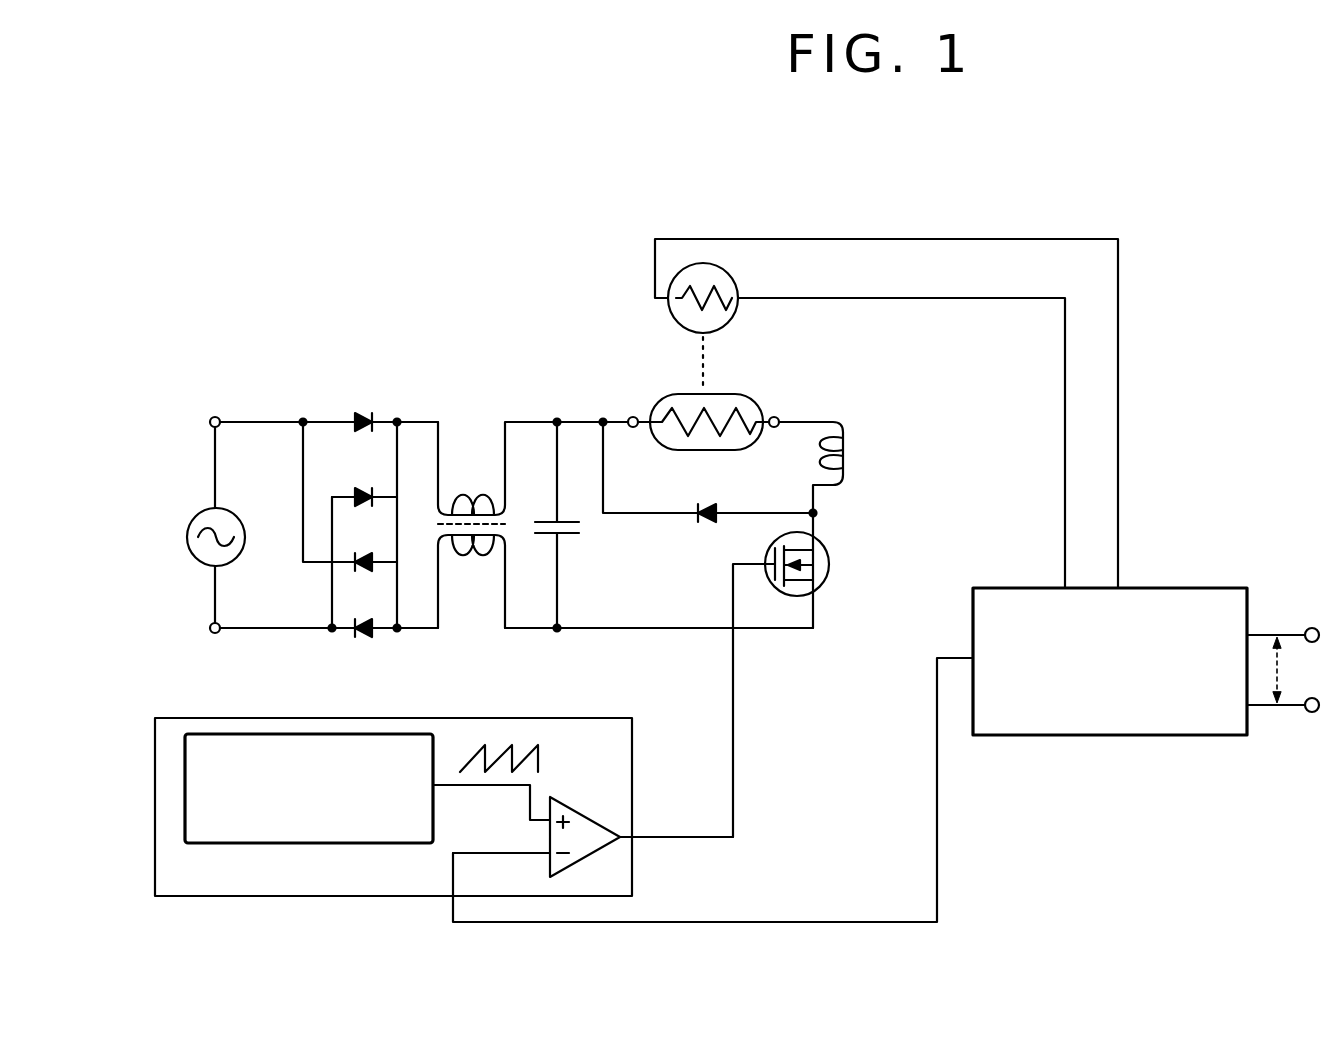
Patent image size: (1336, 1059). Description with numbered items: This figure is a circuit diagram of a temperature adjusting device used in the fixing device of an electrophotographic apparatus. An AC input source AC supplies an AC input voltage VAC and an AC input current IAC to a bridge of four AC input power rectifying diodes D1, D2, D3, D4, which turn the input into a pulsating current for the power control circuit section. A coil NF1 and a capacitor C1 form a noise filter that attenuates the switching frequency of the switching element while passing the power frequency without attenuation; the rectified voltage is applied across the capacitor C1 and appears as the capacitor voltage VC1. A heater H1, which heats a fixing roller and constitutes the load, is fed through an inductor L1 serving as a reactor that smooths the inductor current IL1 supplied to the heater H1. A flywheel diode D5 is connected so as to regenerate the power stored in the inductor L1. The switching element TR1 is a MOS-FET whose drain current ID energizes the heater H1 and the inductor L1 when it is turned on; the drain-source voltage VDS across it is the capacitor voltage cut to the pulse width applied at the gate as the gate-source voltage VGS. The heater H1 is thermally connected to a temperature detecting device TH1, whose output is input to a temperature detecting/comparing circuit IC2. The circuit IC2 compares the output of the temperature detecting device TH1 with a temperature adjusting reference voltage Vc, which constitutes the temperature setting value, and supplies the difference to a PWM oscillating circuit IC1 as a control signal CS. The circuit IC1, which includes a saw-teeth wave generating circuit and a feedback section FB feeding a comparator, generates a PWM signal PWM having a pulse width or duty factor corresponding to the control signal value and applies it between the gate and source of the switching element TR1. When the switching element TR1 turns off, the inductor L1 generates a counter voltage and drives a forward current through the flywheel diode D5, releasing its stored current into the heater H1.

The AC input power AC is at (209, 525).
The AC input voltage VAC is at (225, 424).
The AC input current IAC is at (293, 403).
The AC input power rectifying diode D1 is at (355, 417).
The AC input power rectifying diode D2 is at (363, 560).
The AC input power rectifying diode D3 is at (350, 496).
The AC input power rectifying diode D4 is at (329, 529).
The coil NF1 is at (478, 492).
The capacitor C1 is at (545, 518).
The voltage across the capacitor VC1 is at (582, 402).
The heater H1 is at (717, 395).
The temperature detecting device TH1 is at (728, 273).
The inductor L1 is at (846, 455).
The inductor current IL1 is at (812, 401).
The flywheel diode D5 is at (713, 504).
The MOS-FET switching element TR1 is at (828, 548).
The drain-source voltage VDS is at (848, 519).
The drain current ID is at (840, 553).
The gate-source voltage VGS is at (741, 685).
The temperature detecting/comparing circuit IC2 is at (1015, 588).
The temperature adjusting reference voltage Vc is at (1283, 670).
The control signal CS is at (713, 790).
The PWM oscillating circuit IC1 is at (192, 718).
The feedback FB is at (483, 874).
The PWM signal PWM is at (676, 818).